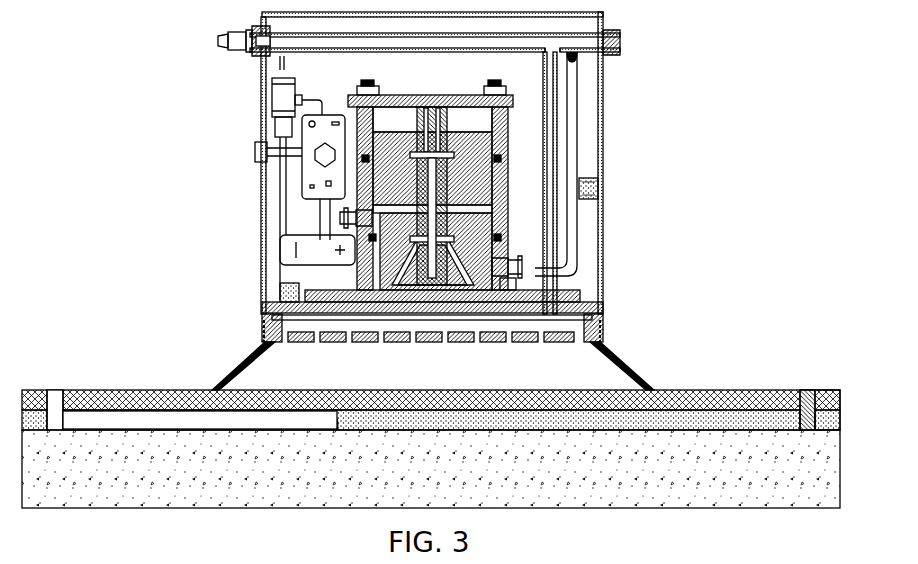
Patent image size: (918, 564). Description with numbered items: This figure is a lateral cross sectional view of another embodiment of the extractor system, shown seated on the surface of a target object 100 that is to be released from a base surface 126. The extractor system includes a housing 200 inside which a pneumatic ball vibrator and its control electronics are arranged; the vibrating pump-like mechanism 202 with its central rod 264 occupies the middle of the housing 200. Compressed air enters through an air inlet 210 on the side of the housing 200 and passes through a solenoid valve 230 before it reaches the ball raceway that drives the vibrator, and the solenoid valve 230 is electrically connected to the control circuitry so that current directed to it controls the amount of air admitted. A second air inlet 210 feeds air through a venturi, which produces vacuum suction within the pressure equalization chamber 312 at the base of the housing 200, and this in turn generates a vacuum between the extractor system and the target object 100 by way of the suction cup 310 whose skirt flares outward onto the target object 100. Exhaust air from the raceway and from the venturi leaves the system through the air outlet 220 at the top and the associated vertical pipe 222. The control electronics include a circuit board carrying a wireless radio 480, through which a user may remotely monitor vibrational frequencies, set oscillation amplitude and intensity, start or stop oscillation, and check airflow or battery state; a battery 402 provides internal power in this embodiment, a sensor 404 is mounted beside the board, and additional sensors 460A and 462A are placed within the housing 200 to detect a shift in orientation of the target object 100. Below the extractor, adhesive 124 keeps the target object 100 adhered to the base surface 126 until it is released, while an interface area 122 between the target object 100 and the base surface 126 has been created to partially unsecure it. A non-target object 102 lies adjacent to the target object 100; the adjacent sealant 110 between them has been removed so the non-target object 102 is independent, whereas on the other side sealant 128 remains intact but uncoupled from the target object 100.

The target object 100 is at (745, 393).
The non-target object 102 is at (830, 392).
The adjacent sealant 110 is at (55, 400).
The interface area 122 is at (138, 424).
The adhesive 124 is at (432, 428).
The base surface 126 is at (452, 482).
The intact adjacent sealant 128 is at (806, 392).
The housing 200 is at (603, 240).
The pump assembly 202 is at (400, 95).
The air inlet 210 is at (232, 32).
The air outlet 220 is at (612, 54).
The vertical pipe 222 is at (572, 160).
The solenoid valve 230 is at (265, 100).
The piston rod 264 is at (466, 125).
The suction cup 310 is at (630, 366).
The pressure equalization chamber 312 is at (598, 324).
The battery 402 is at (280, 250).
The sensor 404 is at (255, 152).
The sensor 460A is at (280, 290).
The sensor 462A is at (598, 190).
The wireless radio 480 is at (310, 165).